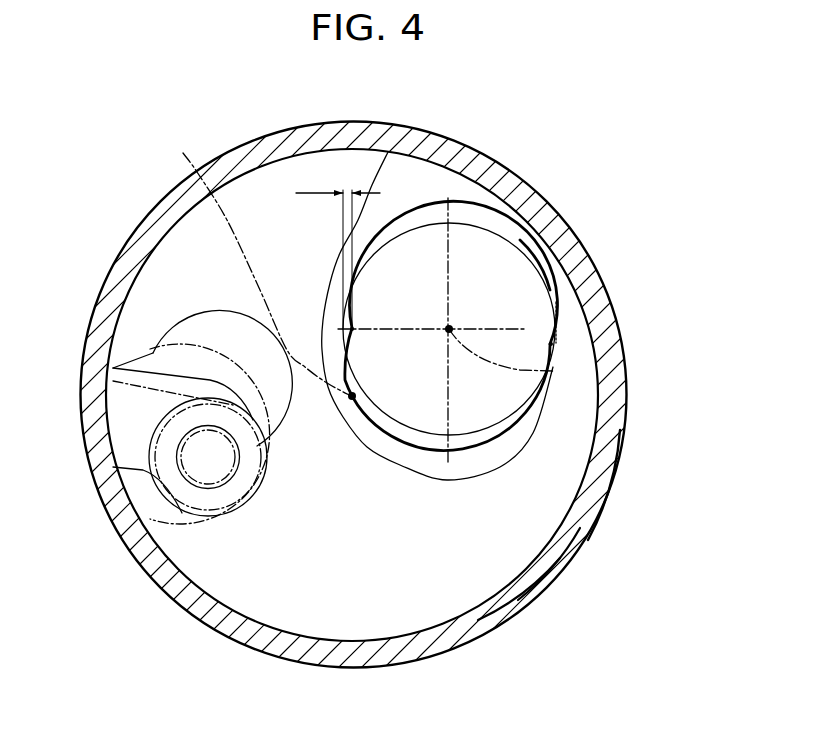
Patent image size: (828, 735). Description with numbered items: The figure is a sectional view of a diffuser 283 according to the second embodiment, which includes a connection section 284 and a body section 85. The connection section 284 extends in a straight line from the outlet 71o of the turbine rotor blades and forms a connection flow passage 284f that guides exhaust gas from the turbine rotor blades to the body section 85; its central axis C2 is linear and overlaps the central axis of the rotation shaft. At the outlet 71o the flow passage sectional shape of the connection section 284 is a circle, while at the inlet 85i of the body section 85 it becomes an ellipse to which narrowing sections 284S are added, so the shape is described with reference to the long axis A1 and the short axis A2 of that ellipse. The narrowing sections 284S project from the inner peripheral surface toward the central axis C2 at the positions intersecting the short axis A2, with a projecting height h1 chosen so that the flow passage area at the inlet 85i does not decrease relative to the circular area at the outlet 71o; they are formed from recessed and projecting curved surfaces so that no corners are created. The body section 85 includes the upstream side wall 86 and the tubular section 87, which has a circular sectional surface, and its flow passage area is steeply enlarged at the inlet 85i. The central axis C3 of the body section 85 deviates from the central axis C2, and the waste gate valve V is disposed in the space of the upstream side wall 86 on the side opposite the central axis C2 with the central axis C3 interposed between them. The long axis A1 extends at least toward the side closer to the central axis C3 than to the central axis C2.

The diffuser 283 is at (147, 205).
The connection section 284 is at (328, 290).
The connection flow passage 284f is at (528, 275).
The narrowing sections 284S is at (552, 343).
The outlet of the turbine rotor blades 71o is at (500, 232).
The body section 85 is at (540, 578).
The inlet of the body section 85i is at (472, 443).
The upstream side wall 86 is at (543, 507).
The tubular section 87 is at (614, 461).
The long axis A1 is at (452, 250).
The short axis A2 is at (525, 329).
The central axis of the connection section C2 is at (553, 371).
The central axis of the body section C3 is at (255, 261).
The waste gate valve V is at (168, 378).
The projecting height h1 is at (338, 247).